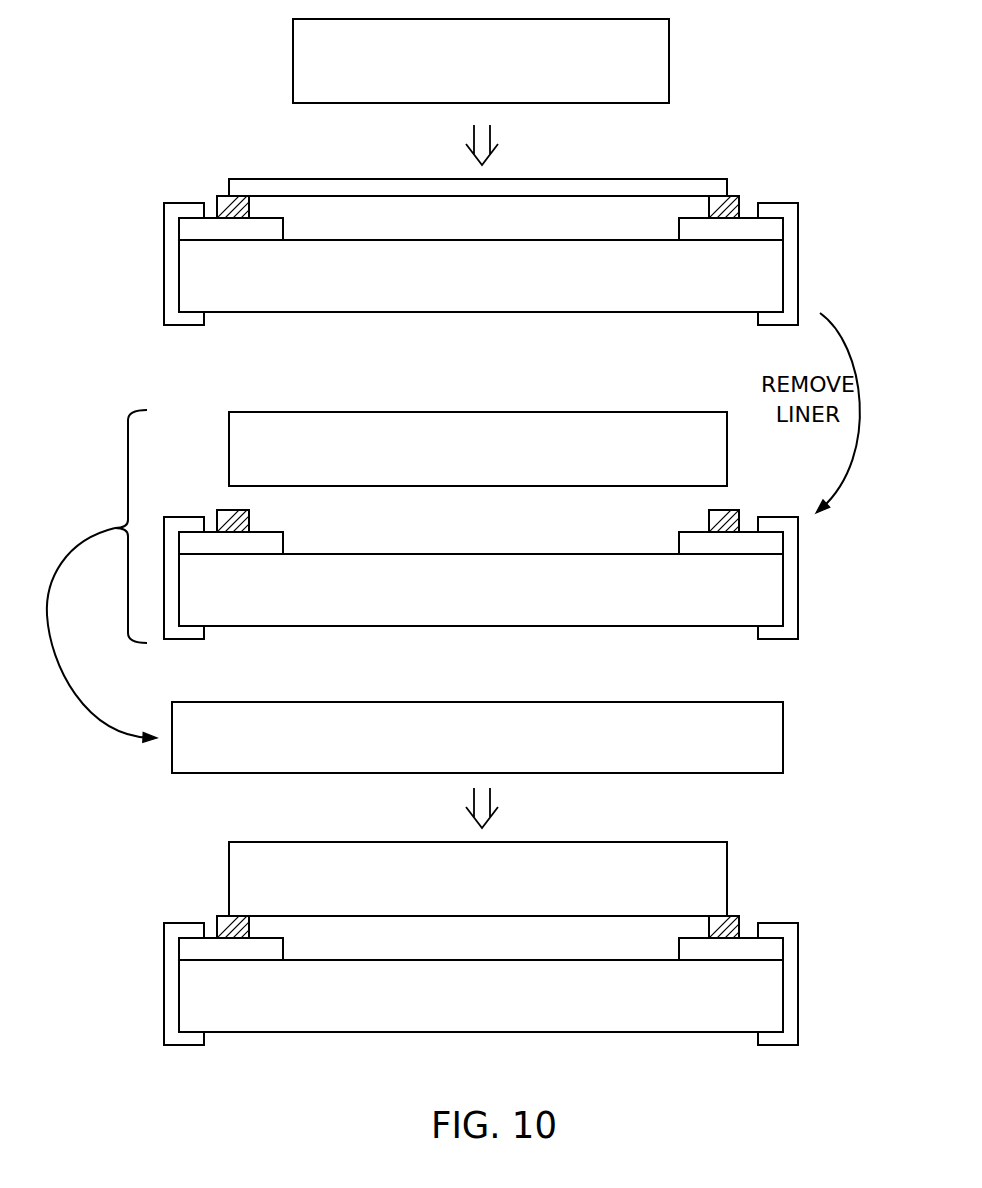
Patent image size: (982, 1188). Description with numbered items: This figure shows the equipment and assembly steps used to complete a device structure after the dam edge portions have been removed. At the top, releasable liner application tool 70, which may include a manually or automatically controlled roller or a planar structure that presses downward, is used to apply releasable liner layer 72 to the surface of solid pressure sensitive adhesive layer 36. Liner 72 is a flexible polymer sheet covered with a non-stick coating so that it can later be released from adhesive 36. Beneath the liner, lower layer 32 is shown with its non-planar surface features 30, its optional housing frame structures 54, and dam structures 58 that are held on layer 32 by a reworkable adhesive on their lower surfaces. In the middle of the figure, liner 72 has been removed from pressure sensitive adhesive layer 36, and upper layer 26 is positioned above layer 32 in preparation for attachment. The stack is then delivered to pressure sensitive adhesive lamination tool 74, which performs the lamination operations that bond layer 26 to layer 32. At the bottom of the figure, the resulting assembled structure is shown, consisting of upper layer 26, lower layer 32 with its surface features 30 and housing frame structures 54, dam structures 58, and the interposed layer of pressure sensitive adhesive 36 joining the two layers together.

The upper layer 26 is at (255, 415).
The surface features 30 is at (770, 230).
The lower layer 32 is at (768, 292).
The pressure sensitive adhesive layer 36 is at (632, 208).
The housing frame structures 54 is at (790, 262).
The dam structures 58 is at (735, 197).
The releasable liner application tool 70 is at (670, 60).
The releasable liner layer 72 is at (255, 184).
The pressure sensitive adhesive lamination tool 74 is at (785, 735).